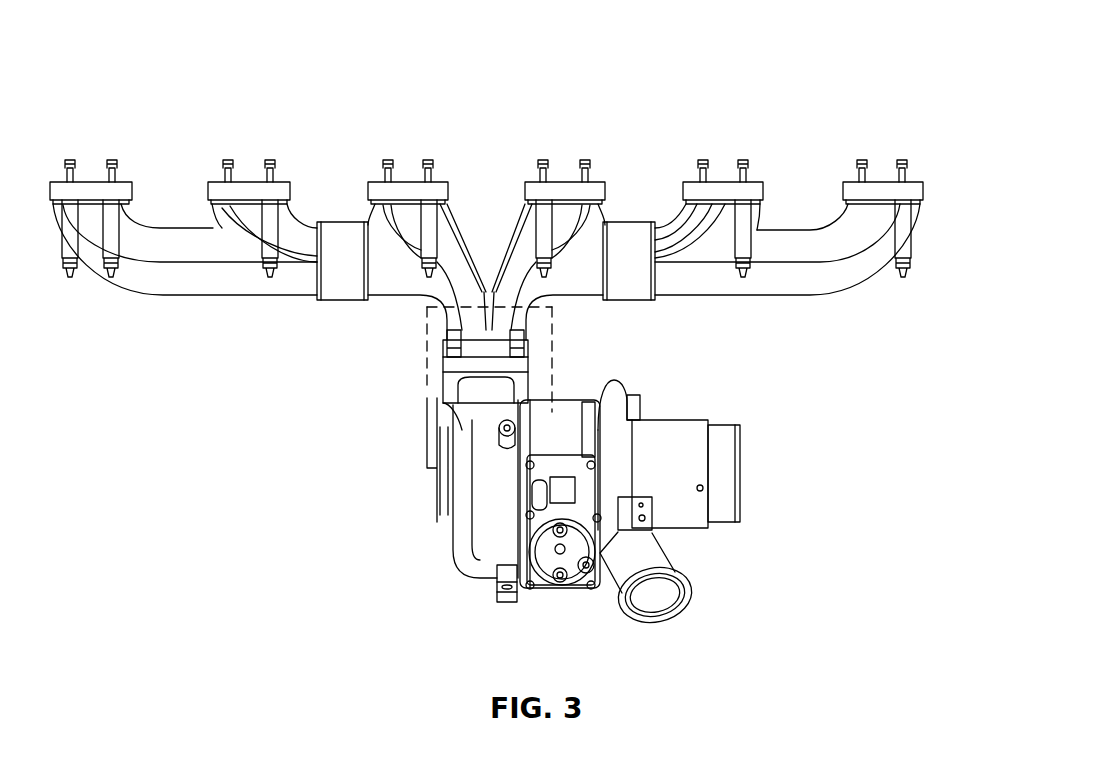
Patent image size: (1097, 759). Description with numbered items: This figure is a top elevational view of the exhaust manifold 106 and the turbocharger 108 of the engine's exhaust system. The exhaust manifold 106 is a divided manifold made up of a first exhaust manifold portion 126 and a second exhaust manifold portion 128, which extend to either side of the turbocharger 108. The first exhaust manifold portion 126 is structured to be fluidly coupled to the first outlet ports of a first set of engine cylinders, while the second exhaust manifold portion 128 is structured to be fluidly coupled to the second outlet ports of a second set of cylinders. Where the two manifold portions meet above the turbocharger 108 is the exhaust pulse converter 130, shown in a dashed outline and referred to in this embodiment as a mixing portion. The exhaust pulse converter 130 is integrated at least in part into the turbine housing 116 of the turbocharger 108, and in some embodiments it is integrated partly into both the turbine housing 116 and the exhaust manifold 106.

The exhaust manifold 106 is at (790, 35).
The turbocharger 108 is at (620, 636).
The turbine housing 116 is at (477, 553).
The first exhaust manifold portion 126 is at (205, 280).
The second exhaust manifold portion 128 is at (714, 270).
The exhaust pulse converter 130 is at (427, 340).